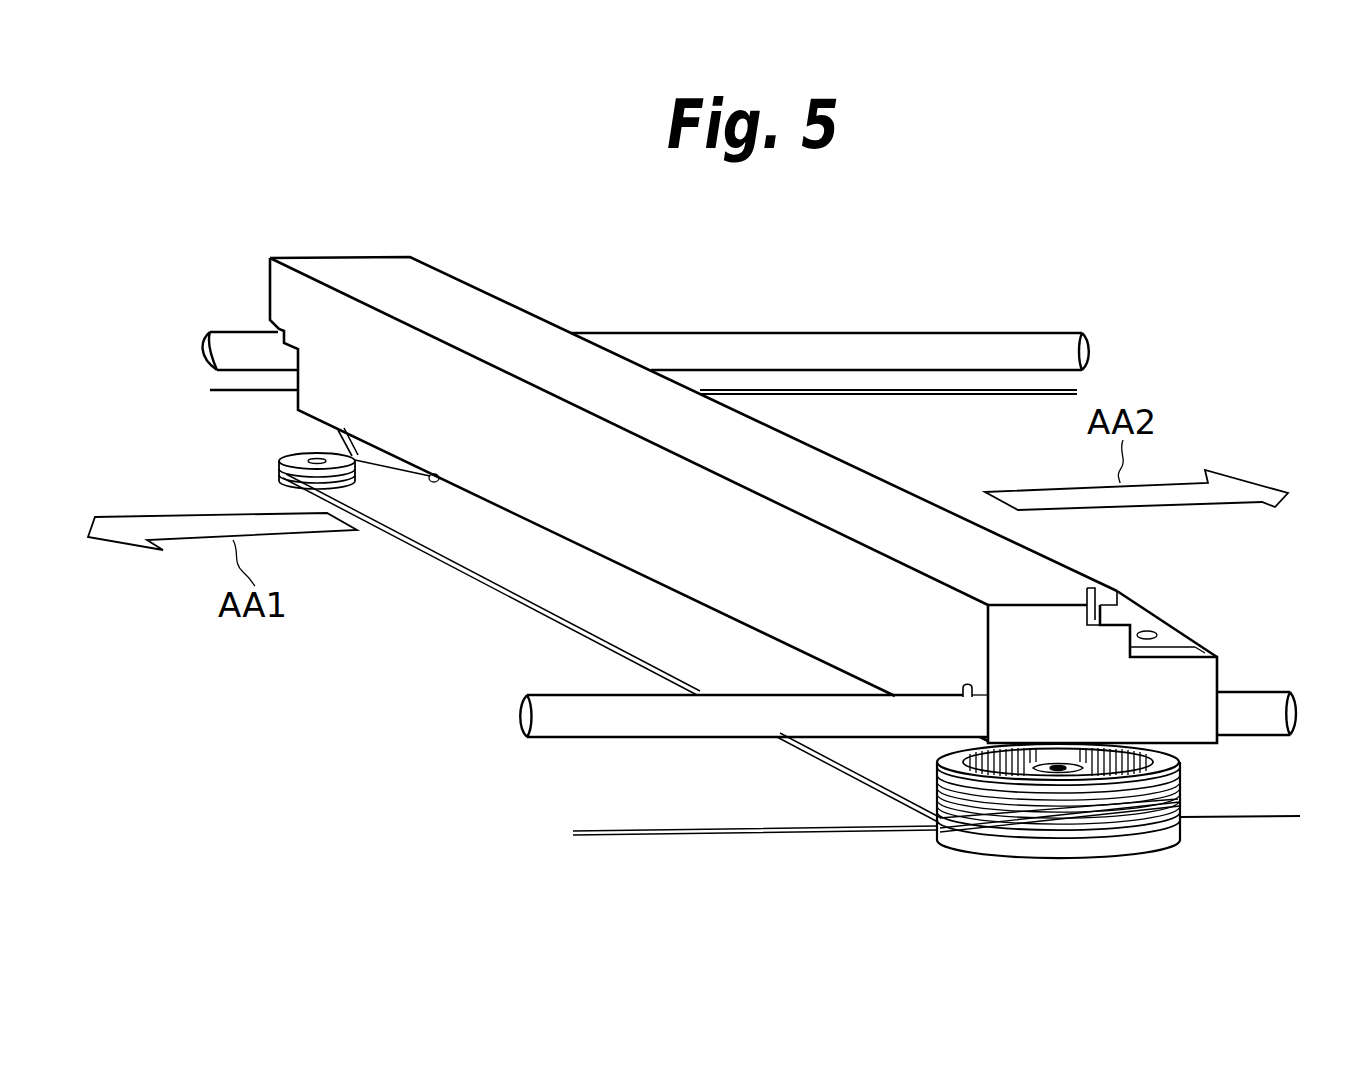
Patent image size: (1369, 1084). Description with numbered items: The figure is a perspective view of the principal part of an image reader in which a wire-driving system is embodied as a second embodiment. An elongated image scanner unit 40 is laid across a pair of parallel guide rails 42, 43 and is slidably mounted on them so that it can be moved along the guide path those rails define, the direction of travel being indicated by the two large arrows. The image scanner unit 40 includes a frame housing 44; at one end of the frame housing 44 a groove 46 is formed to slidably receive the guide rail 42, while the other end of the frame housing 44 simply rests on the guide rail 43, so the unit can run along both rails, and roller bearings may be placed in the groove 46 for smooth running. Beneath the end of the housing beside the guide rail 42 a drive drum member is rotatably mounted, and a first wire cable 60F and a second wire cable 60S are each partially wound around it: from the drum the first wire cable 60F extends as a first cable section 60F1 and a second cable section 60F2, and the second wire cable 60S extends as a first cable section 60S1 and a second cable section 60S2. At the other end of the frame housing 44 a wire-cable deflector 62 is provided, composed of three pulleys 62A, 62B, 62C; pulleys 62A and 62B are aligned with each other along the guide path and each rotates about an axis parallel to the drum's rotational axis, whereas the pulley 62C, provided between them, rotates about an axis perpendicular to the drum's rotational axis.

The image scanner unit 40 is at (850, 447).
The guide rail 42 is at (660, 738).
The guide rail 43 is at (845, 331).
The frame housing 44 is at (1066, 563).
The groove 46 is at (958, 688).
The first wire cable 60F is at (755, 886).
The first cable section 60F1 is at (825, 833).
The second cable section 60F2 is at (1033, 390).
The second wire cable 60S is at (527, 612).
The first cable section 60S1 is at (413, 543).
The second cable section 60S2 is at (1246, 809).
The wire-cable deflector 62 is at (278, 437).
The pulley 62A is at (438, 484).
The pulley 62B is at (360, 490).
The pulley 62C is at (338, 430).